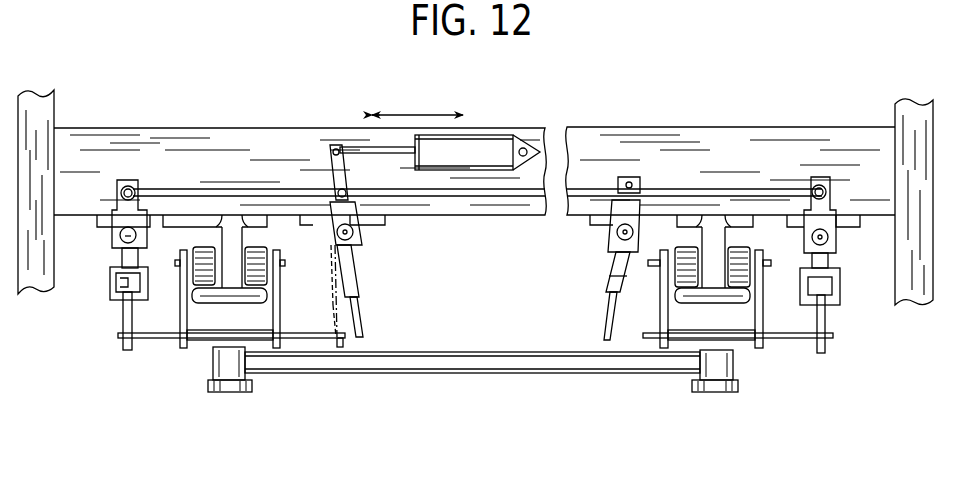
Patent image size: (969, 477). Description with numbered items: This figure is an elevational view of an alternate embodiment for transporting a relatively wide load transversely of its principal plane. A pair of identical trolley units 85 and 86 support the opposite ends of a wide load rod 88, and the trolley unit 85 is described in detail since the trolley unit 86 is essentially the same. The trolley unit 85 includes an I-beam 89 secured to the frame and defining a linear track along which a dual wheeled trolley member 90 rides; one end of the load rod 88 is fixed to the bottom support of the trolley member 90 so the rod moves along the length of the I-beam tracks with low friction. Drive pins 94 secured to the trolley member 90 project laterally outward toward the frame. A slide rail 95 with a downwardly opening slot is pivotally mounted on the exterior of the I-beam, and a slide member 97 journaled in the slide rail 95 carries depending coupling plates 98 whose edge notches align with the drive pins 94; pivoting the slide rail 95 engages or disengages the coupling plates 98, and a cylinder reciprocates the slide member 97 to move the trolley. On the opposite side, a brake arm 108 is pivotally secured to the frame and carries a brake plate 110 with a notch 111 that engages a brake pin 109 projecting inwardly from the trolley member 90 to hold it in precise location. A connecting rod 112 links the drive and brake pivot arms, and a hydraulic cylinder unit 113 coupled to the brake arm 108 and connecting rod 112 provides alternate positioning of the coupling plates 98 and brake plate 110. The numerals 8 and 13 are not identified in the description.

The post 8 is at (912, 295).
The section line 13 is at (157, 377).
The trolley unit 85 is at (274, 171).
The trolley unit 86 is at (706, 398).
The load rod 88 is at (518, 363).
The I-beam 89 is at (233, 223).
The trolley member 90 is at (239, 396).
The drive pins 94 is at (163, 341).
The slide rail 95 is at (104, 301).
The slide member 97 is at (115, 283).
The coupling plates 98 is at (122, 348).
The brake arm 108 is at (373, 277).
The brake pins 109 is at (308, 341).
The brake plate 110 is at (364, 312).
The notch 111 is at (364, 338).
The connecting rod 112 is at (197, 189).
The hydraulic cylinder unit 113 is at (473, 148).